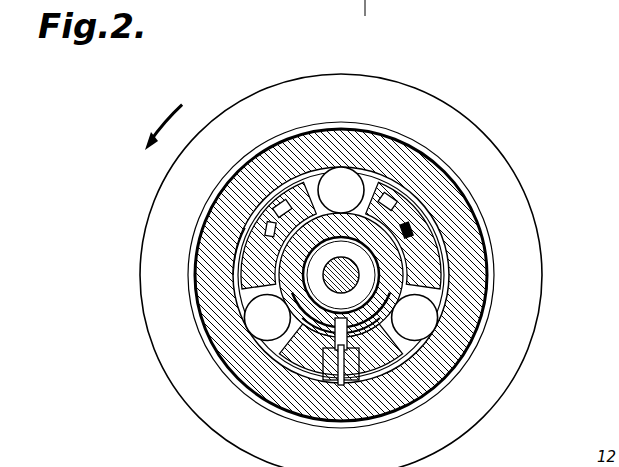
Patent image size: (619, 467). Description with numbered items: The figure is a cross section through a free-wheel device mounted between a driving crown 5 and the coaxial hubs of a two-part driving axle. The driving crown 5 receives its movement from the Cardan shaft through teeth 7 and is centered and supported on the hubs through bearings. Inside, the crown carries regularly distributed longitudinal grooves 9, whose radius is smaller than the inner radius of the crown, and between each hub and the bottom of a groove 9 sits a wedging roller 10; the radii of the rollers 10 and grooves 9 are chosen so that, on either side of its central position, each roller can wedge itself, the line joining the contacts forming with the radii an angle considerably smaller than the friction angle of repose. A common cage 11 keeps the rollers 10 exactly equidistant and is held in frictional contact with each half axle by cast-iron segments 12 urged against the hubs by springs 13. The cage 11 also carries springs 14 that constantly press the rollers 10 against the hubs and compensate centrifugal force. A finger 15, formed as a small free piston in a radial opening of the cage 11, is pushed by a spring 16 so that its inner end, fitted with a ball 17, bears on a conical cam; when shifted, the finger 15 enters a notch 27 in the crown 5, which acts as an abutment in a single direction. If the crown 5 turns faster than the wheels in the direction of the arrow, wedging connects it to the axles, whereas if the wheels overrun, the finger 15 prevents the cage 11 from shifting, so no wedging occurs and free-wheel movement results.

The driving crown 5 is at (410, 165).
The teeth 7 is at (497, 190).
The longitudinal grooves 9 is at (318, 155).
The wedging rollers 10 is at (343, 190).
The cage 11 is at (282, 196).
The cast-iron segments 12 is at (267, 318).
The springs 13 is at (280, 208).
The springs 14 is at (236, 275).
The finger 15 is at (371, 353).
The spring 16 is at (326, 368).
The ball 17 is at (341, 275).
The plunger 27 is at (339, 386).